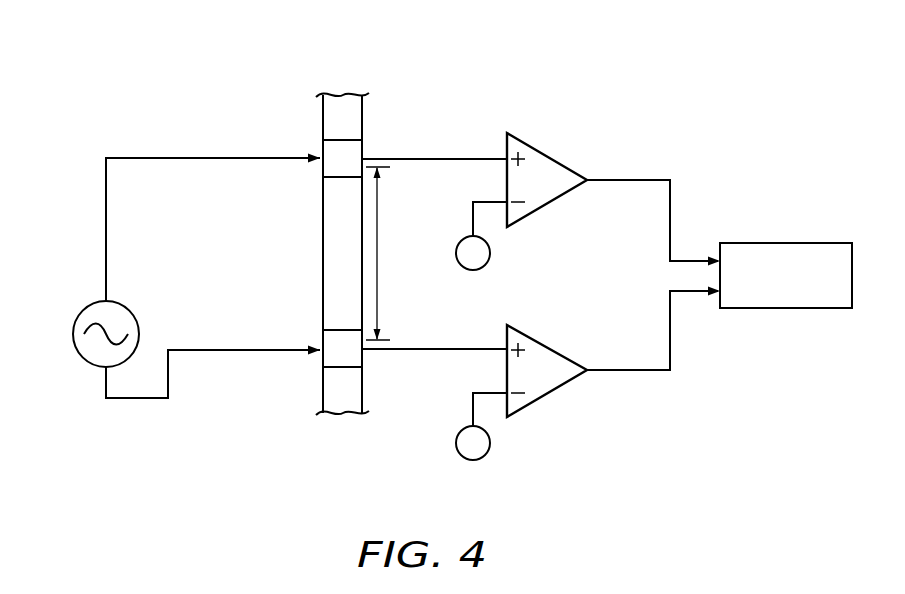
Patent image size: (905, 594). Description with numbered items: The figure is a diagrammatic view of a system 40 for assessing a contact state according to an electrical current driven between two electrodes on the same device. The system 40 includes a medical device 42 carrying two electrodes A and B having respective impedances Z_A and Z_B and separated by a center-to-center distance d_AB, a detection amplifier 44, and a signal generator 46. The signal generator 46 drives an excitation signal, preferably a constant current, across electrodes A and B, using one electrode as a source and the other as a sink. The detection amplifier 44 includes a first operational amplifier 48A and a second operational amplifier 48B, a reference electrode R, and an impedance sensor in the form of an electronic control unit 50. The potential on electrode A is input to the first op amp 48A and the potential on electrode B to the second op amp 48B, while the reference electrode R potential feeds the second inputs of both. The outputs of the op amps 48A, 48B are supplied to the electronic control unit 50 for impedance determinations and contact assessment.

The system 40 is at (252, 60).
The medical device 42 is at (322, 250).
The detection amplifier 44 is at (568, 272).
The signal generator 46 is at (80, 360).
The first operational amplifier 48A is at (545, 153).
The second operational amplifier 48B is at (545, 395).
The electronic control unit 50 is at (787, 243).